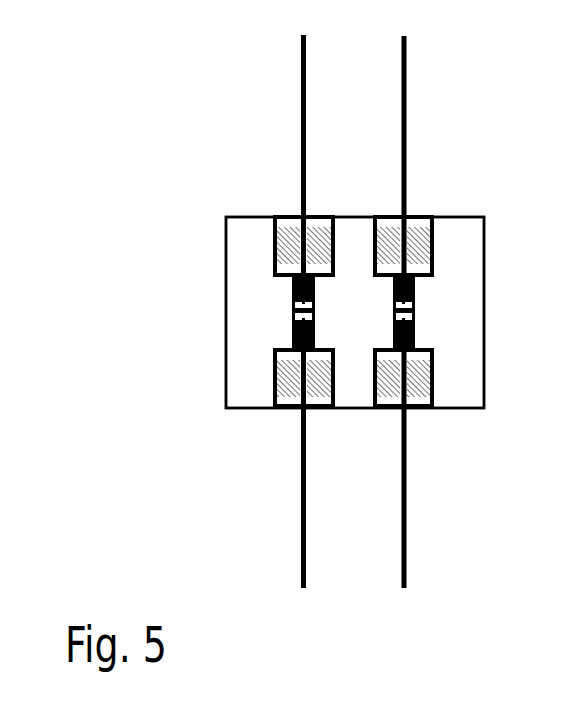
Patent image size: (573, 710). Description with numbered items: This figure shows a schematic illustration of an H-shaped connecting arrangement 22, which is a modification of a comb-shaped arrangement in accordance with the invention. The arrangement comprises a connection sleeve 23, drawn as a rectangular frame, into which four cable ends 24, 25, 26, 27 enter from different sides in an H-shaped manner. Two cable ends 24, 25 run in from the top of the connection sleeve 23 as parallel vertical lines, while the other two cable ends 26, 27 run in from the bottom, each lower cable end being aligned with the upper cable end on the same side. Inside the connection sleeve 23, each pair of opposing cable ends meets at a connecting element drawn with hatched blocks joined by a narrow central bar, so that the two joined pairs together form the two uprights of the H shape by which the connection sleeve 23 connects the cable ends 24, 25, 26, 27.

The connecting arrangement 22 is at (128, 222).
The connection sleeve 23 is at (242, 296).
The cable end 24 is at (300, 68).
The cable end 25 is at (401, 58).
The cable end 26 is at (300, 525).
The cable end 27 is at (401, 515).